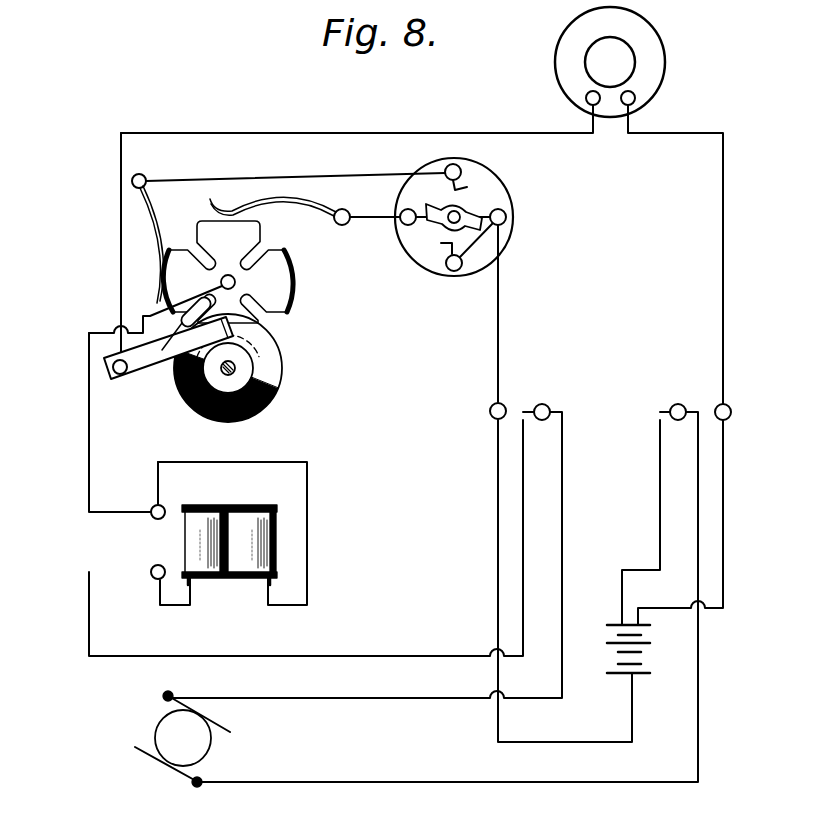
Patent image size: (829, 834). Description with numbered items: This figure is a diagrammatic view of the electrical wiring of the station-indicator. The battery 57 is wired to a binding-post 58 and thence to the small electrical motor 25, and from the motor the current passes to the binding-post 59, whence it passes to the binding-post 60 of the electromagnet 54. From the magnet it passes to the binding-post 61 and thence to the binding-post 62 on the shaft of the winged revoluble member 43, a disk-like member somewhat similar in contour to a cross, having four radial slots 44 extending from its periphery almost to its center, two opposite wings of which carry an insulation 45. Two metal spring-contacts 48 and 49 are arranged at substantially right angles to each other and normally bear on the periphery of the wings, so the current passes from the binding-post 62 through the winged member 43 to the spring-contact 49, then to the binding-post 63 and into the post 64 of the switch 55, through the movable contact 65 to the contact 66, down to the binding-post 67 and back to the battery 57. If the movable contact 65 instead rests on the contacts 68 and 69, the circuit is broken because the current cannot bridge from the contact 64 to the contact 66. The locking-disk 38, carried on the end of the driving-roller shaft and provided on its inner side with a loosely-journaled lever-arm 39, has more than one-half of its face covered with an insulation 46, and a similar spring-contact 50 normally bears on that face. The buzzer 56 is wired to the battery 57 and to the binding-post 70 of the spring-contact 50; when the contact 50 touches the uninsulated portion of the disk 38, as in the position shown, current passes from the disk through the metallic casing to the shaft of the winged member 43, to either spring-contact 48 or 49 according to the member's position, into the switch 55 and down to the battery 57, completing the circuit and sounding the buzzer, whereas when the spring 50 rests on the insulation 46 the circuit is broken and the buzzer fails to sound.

The electrical motor 25 is at (177, 730).
The locking-disk 38 is at (250, 368).
The lever-arm 39 is at (163, 352).
The revoluble member 43 is at (282, 293).
The radial slots 44 is at (201, 250).
The insulation 45 is at (150, 305).
The insulation 46 is at (267, 400).
The spring-contact 48 is at (155, 236).
The spring-contact 49 is at (293, 196).
The spring-contact 50 is at (165, 355).
The electromagnet 54 is at (212, 520).
The switch 55 is at (511, 198).
The buzzer 56 is at (667, 67).
The battery 57 is at (643, 662).
The binding-post 58 is at (680, 405).
The binding-post 59 is at (546, 405).
The binding-post 60 is at (157, 566).
The binding-post 61 is at (153, 505).
The binding-post 62 is at (228, 275).
The binding-post 63 is at (348, 211).
The post 64 is at (402, 223).
The movable contact 65 is at (443, 208).
The contact 66 is at (507, 219).
The binding-post 67 is at (500, 402).
The contact 68 is at (465, 189).
The contact 69 is at (446, 256).
The binding-post 70 is at (120, 375).